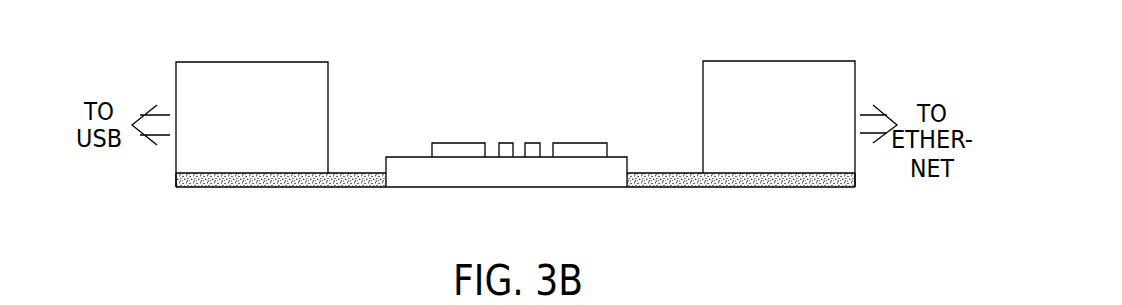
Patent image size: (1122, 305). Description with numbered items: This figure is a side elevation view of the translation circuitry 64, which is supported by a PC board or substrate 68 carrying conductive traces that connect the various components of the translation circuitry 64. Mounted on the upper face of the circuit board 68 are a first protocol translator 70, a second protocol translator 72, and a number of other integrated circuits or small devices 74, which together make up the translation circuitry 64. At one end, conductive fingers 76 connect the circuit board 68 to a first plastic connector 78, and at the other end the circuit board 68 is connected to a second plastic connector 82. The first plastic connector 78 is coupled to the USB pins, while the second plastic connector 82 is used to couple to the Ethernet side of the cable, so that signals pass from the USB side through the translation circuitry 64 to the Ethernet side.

The translation circuitry 64 is at (572, 88).
The PC board 68 is at (575, 163).
The first protocol translator 70 is at (465, 148).
The second protocol translator 72 is at (580, 148).
The small devices 74 is at (505, 148).
The conductive fingers 76 is at (320, 188).
The first plastic connector 78 is at (265, 78).
The second plastic connector 82 is at (774, 77).